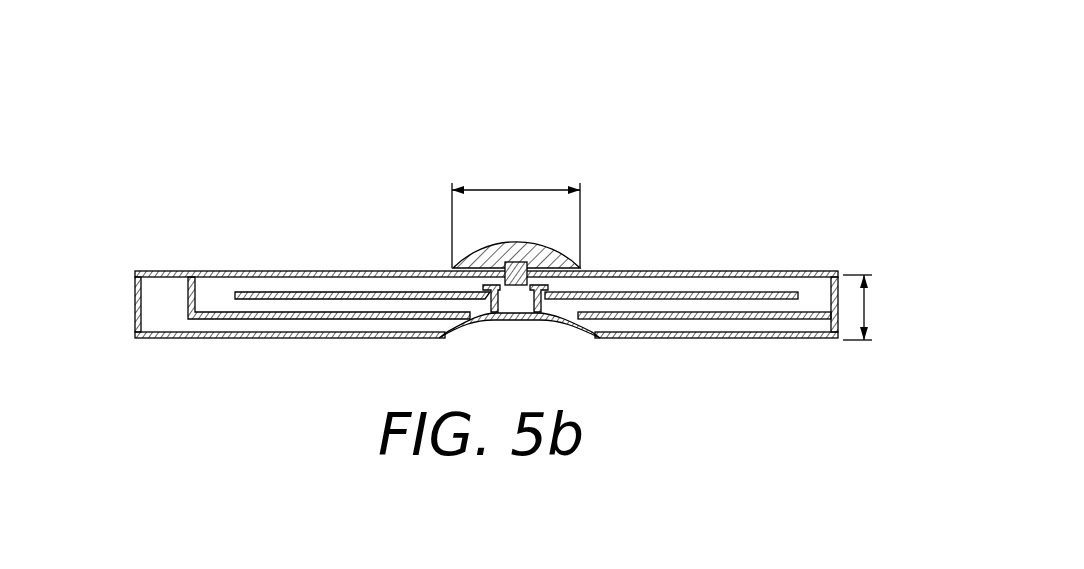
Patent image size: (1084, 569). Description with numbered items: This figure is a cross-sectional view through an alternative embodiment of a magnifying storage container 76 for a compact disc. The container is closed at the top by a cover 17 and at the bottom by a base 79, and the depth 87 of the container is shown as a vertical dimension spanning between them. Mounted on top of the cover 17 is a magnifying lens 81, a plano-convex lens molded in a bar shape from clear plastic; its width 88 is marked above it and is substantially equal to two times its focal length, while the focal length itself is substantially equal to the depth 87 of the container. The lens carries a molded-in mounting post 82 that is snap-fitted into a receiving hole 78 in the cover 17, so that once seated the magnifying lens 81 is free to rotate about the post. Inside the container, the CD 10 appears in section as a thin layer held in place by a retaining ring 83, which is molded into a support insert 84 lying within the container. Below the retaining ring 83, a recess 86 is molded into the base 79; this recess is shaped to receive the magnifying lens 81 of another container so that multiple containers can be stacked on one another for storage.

The magnifying storage container 76 is at (670, 204).
The cover 17 is at (740, 271).
The CD 10 is at (797, 295).
The base 79 is at (815, 339).
The support insert 84 is at (659, 320).
The recess 86 is at (556, 321).
The retaining ring 83 is at (484, 289).
The mounting post 82 is at (556, 286).
The receiving hole 78 is at (503, 247).
The magnifying lens 81 is at (532, 246).
The depth 87 is at (864, 308).
The width 88 is at (512, 190).